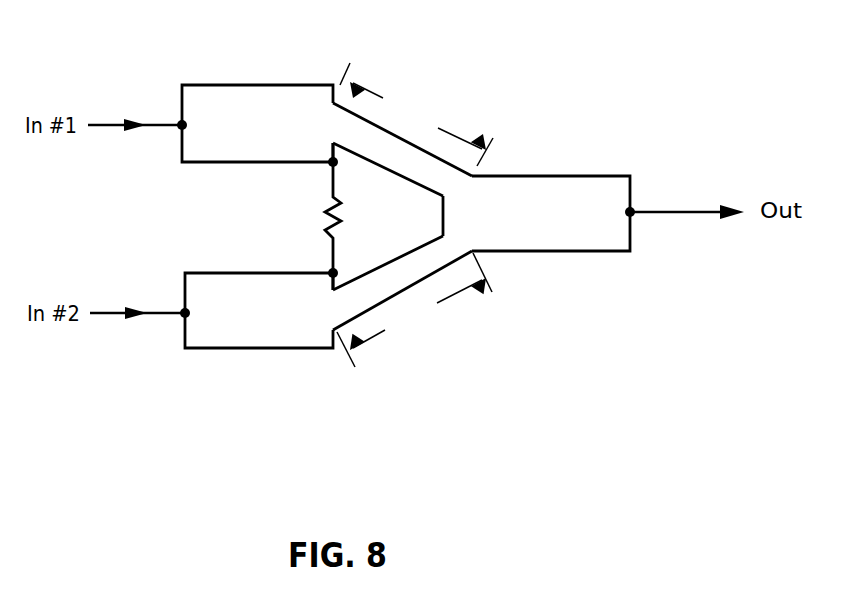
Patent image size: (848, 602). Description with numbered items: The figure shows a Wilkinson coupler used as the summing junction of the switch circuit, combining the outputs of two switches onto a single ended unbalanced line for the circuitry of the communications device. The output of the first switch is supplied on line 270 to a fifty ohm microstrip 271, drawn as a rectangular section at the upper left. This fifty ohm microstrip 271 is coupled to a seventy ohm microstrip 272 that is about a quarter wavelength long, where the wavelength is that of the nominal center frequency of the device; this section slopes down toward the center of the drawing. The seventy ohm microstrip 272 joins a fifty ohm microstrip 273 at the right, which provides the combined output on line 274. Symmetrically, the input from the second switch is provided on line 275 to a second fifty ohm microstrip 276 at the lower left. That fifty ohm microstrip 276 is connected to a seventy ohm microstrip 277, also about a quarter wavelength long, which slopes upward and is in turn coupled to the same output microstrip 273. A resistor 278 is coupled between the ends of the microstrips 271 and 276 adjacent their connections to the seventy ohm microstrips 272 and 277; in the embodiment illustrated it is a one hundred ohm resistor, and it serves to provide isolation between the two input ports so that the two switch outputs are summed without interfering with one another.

The line 270 is at (110, 125).
The 50 ohm microstrip 271 is at (218, 85).
The 70 ohm microstrip 272 is at (430, 153).
The 50 ohm microstrip 273 is at (563, 176).
The line 274 is at (667, 212).
The line 275 is at (110, 316).
The 50 ohm microstrip 276 is at (260, 348).
The 70 ohm microstrip 277 is at (433, 278).
The resistor 278 is at (342, 207).